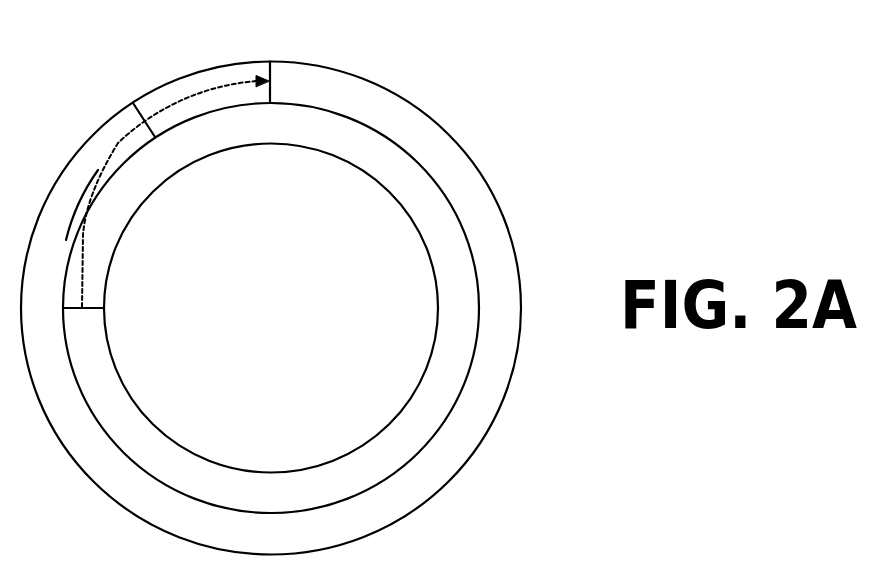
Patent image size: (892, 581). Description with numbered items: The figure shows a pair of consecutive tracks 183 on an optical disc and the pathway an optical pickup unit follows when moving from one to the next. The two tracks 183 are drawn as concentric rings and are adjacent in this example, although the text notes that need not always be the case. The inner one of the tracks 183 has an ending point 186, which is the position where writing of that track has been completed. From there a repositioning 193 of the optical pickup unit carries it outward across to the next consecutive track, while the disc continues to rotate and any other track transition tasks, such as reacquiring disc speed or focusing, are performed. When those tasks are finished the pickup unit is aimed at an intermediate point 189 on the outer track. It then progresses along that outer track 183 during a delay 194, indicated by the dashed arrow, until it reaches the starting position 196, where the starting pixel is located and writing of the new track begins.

The tracks 183 is at (430, 410).
The ending point 186 is at (90, 310).
The intermediate point 189 is at (143, 101).
The repositioning 193 is at (90, 190).
The delay 194 is at (218, 87).
The starting position 196 is at (273, 70).